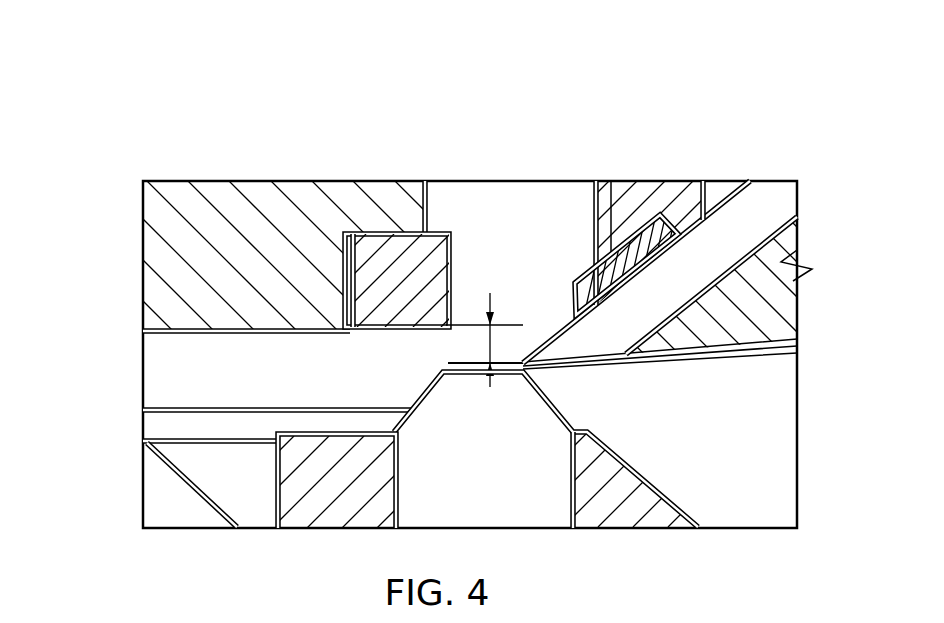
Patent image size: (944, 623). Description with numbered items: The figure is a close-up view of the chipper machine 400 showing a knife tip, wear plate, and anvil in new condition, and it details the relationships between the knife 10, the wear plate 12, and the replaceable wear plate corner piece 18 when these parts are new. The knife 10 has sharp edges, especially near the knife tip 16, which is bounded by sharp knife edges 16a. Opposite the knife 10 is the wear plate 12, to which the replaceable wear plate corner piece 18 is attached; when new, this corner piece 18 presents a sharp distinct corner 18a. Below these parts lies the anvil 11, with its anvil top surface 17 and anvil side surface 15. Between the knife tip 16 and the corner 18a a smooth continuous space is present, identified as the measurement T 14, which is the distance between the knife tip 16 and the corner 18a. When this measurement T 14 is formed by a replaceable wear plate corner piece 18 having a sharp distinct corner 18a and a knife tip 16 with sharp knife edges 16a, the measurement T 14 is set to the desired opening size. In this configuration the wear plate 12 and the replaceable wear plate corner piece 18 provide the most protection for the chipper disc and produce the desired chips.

The chipper machine 400 is at (180, 62).
The knife 10 is at (766, 204).
The anvil 11 is at (518, 476).
The wear plate 12 is at (303, 200).
The measurement T 14 is at (487, 346).
The anvil side surface 15 is at (557, 402).
The knife tip 16 is at (523, 352).
The sharp knife edges 16a is at (608, 330).
The anvil top surface 17 is at (468, 377).
The replaceable wear plate corner piece 18 is at (452, 243).
The sharp distinct corner 18a is at (452, 322).